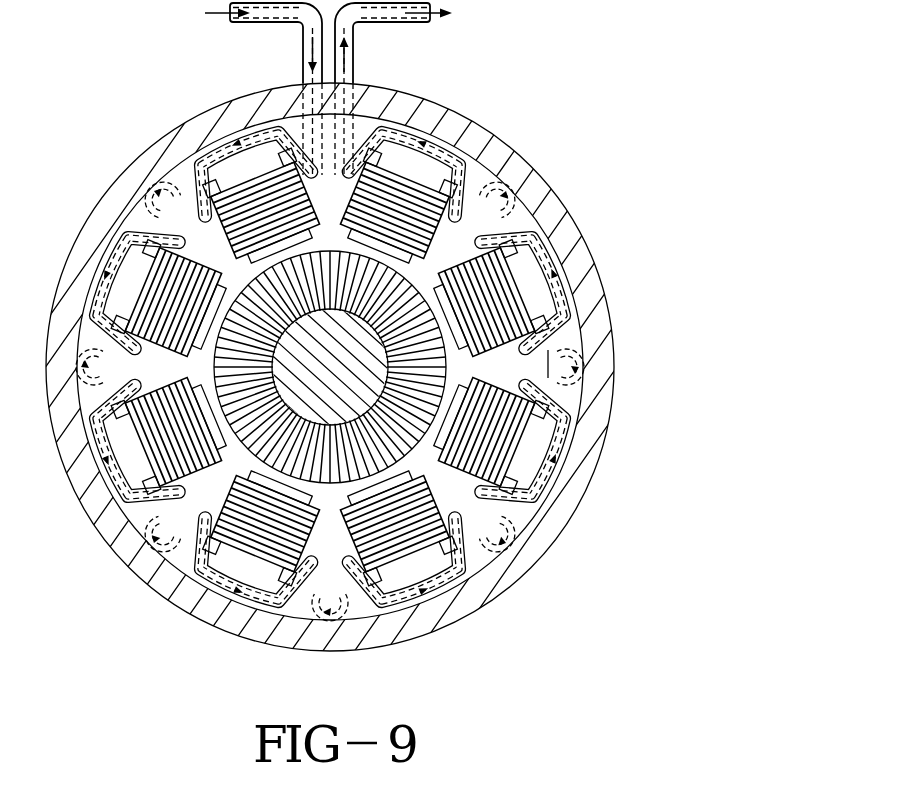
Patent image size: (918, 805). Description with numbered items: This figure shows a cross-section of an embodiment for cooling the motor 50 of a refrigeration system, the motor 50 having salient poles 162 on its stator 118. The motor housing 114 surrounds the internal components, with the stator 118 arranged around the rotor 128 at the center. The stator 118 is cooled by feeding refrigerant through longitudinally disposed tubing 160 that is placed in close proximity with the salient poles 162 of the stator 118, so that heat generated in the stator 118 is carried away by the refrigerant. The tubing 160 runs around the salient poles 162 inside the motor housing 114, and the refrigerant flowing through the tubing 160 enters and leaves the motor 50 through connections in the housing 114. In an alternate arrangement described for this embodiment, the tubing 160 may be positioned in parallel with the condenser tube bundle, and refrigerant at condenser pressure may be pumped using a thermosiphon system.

The motor 50 is at (557, 537).
The motor housing 114 is at (595, 470).
The stator 118 is at (407, 160).
The rotor 128 is at (520, 361).
The tubing 160 is at (483, 210).
The salient poles 162 is at (463, 253).